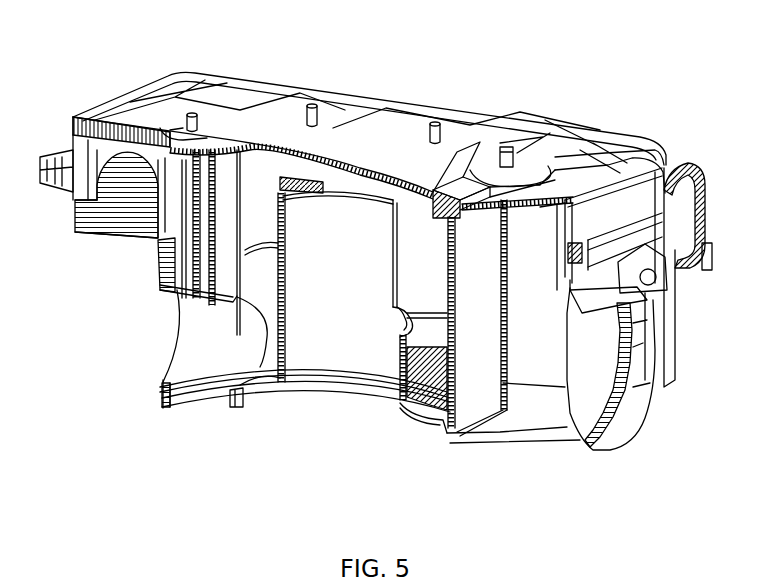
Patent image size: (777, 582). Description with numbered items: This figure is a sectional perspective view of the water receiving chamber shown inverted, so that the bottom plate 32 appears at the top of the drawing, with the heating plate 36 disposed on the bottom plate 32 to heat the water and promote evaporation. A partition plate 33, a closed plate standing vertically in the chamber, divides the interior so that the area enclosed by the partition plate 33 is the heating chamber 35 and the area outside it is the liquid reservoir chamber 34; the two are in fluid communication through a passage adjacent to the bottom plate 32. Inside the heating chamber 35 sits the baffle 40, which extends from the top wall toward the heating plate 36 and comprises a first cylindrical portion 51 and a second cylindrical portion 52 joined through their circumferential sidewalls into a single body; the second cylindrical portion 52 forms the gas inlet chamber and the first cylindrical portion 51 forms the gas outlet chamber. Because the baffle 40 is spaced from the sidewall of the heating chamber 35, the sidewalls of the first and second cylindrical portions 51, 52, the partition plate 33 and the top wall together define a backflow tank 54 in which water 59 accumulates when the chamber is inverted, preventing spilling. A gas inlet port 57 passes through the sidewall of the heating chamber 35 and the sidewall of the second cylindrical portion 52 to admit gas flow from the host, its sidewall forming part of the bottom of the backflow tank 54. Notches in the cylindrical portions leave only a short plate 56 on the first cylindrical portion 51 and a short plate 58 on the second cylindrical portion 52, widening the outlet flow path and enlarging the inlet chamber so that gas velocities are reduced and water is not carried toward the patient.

The bottom plate 32 is at (237, 103).
The partition plate 33 is at (505, 485).
The liquid reservoir chamber 34 is at (533, 330).
The heating chamber 35 is at (415, 205).
The heating plate 36 is at (318, 140).
The baffle 40 is at (337, 193).
The first cylindrical portion 51 is at (358, 333).
The second cylindrical portion 52 is at (277, 350).
The backflow tank 54 is at (227, 265).
The plate 56 is at (400, 358).
The gas inlet port 57 is at (173, 335).
The plate 58 is at (232, 283).
The water 59 is at (420, 397).